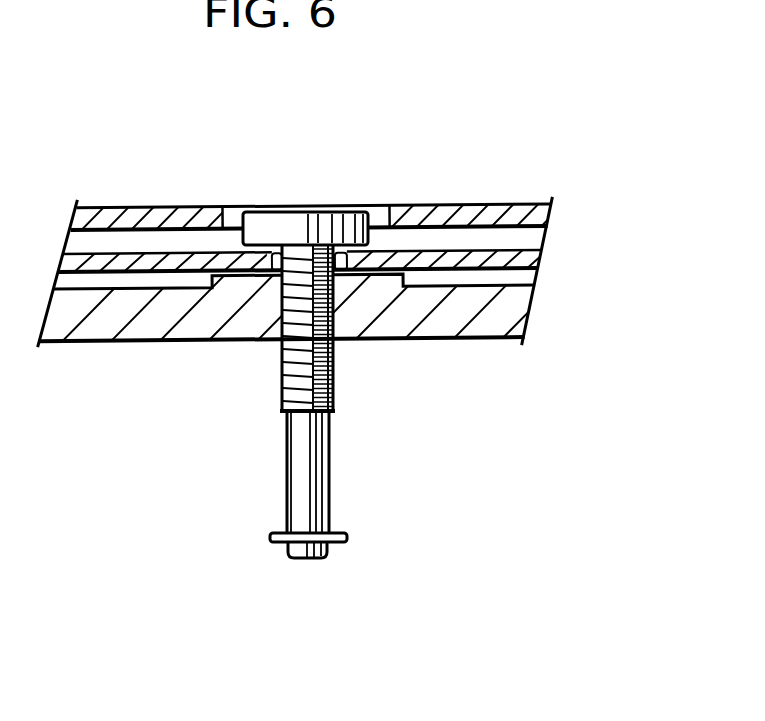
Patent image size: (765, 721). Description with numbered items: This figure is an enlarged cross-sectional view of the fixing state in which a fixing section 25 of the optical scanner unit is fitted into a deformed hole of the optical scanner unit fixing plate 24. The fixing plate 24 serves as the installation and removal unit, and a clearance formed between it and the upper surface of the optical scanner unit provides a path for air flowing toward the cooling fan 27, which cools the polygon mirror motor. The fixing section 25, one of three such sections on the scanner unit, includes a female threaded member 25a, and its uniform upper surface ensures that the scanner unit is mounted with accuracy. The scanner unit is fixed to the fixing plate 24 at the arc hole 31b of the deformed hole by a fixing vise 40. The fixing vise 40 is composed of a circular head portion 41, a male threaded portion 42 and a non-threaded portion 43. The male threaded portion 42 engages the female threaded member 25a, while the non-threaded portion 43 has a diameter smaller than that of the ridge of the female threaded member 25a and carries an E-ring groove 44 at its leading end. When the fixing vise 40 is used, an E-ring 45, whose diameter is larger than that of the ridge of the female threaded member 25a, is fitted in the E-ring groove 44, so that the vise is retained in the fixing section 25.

The optical scanner unit fixing plate 24 is at (142, 252).
The fixing section 25 is at (358, 258).
The female threaded member 25a is at (322, 362).
The cooling fan 27 is at (440, 205).
The arc hole 31b is at (283, 282).
The fixing vise 40 is at (324, 304).
The circular head portion 41 is at (263, 207).
The male threaded portion 42 is at (333, 385).
The non-threaded portion 43 is at (330, 455).
The E-ring groove 44 is at (300, 532).
The E-ring 45 is at (347, 536).